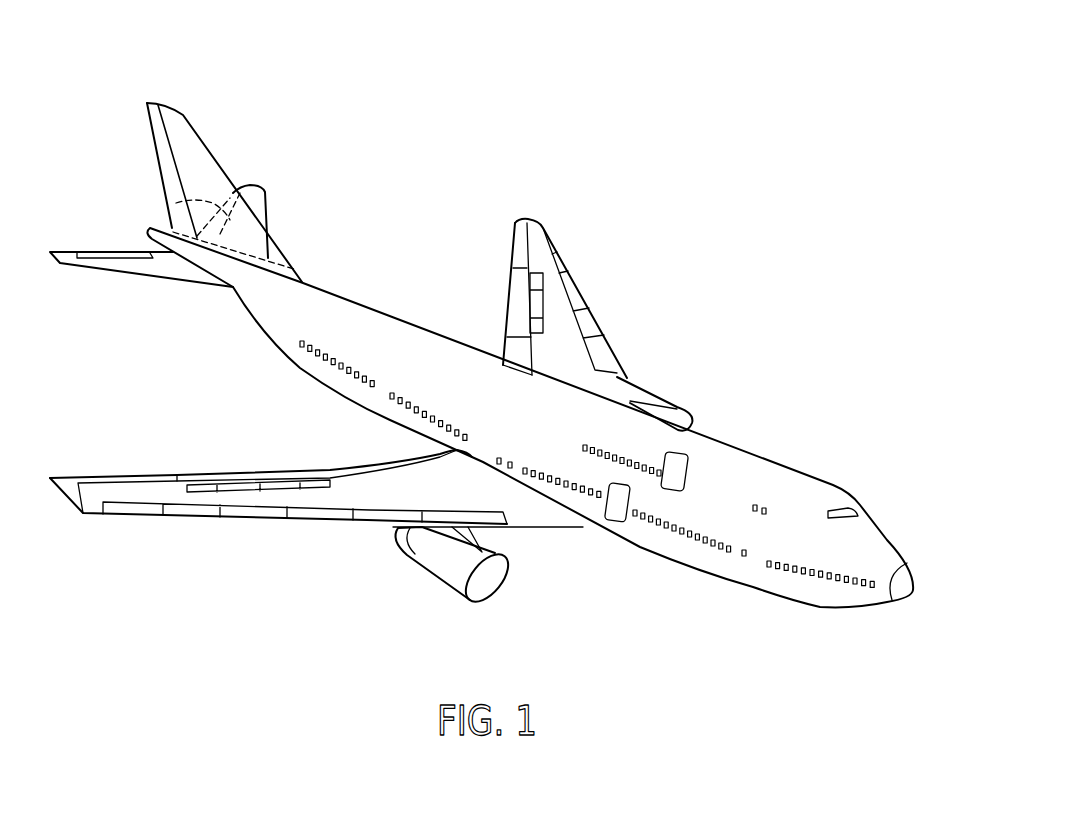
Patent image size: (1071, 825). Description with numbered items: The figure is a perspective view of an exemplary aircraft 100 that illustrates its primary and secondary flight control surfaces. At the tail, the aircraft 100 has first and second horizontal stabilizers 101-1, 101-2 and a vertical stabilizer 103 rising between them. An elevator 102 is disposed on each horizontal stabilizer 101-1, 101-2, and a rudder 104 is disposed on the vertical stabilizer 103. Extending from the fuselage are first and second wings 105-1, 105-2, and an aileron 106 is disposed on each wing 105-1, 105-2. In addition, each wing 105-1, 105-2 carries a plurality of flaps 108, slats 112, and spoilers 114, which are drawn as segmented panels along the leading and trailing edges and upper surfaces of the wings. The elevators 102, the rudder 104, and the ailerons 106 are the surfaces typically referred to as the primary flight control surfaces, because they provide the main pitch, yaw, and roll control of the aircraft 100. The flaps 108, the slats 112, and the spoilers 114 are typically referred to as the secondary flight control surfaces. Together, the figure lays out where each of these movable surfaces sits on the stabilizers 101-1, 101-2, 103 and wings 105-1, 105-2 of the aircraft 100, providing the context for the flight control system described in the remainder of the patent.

The aircraft 100 is at (481, 309).
The first horizontal stabilizer 101-1 is at (123, 275).
The second horizontal stabilizer 101-2 is at (270, 203).
The elevator 102 is at (176, 203).
The vertical stabilizer 103 is at (209, 150).
The rudder 104 is at (151, 122).
The first wing 105-1 is at (530, 507).
The second wing 105-2 is at (612, 393).
The aileron 106 is at (518, 245).
The flaps 108 is at (513, 353).
The slats 112 is at (590, 325).
The spoilers 114 is at (537, 308).